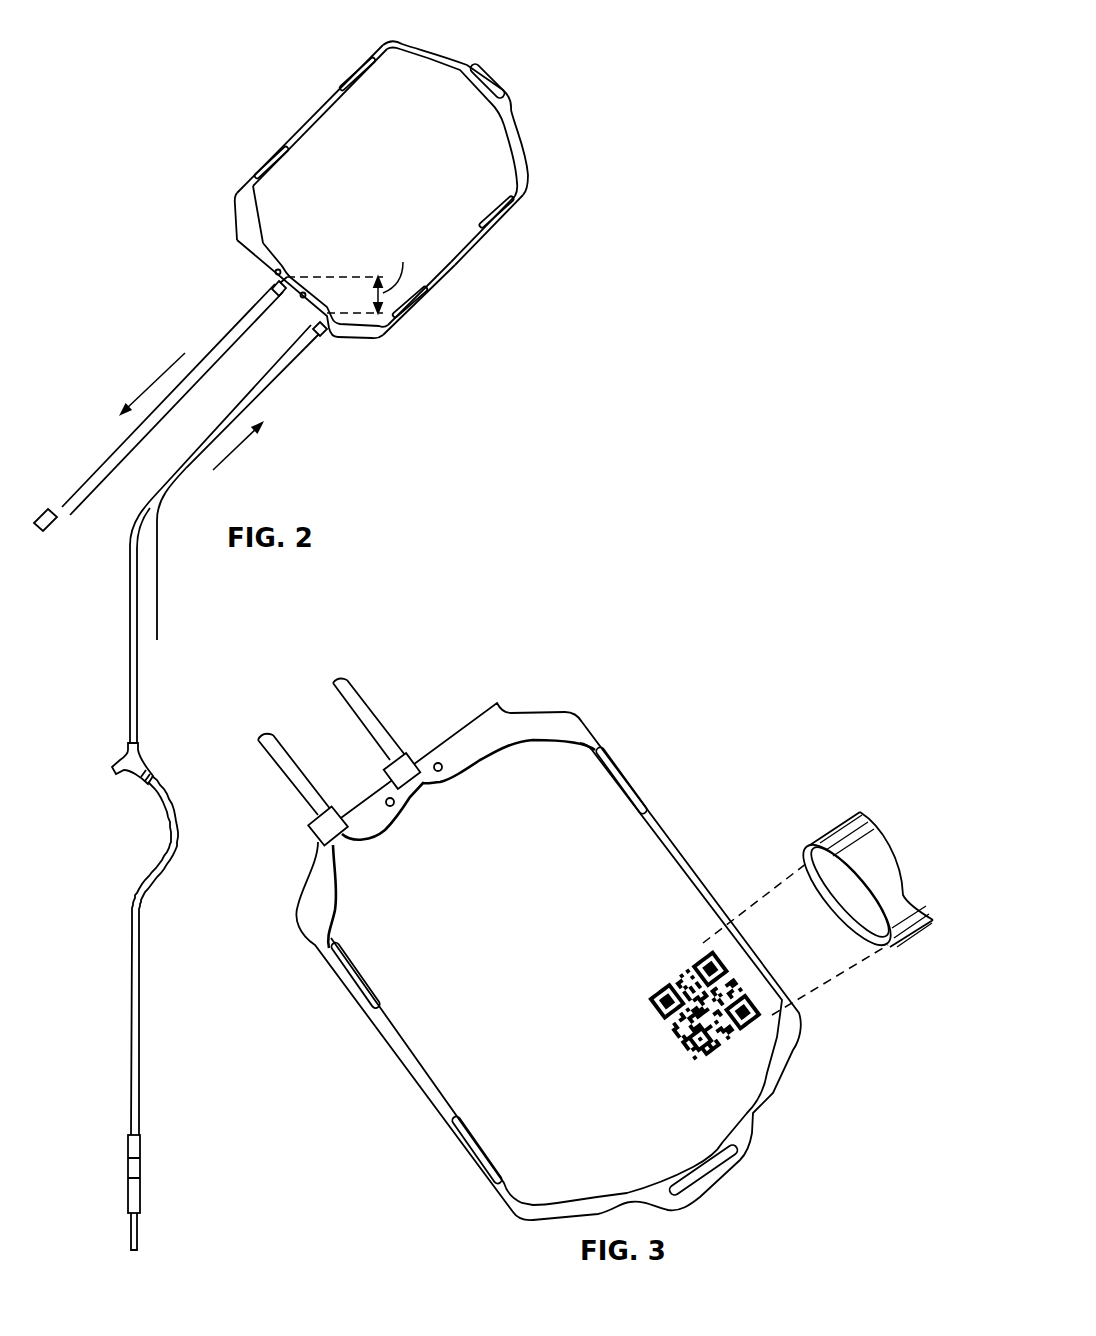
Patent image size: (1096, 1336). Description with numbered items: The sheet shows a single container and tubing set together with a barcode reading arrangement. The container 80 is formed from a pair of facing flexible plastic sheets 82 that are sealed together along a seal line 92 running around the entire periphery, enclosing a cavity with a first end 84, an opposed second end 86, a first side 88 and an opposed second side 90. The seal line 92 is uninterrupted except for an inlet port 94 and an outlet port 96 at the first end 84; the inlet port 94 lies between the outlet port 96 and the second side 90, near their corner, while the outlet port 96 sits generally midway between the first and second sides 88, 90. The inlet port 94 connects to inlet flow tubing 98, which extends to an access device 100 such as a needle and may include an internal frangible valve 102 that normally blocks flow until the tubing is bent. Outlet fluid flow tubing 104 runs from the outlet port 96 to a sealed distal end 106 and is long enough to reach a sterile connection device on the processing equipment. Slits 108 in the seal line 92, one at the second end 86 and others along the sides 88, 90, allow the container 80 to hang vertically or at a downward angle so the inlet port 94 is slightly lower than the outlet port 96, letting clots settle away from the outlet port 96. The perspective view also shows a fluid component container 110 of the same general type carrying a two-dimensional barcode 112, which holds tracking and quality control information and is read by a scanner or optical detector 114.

In FIG. 2, the container 80 is at (540, 152).
In FIG. 2, the flexible plastic films or sheets 82 is at (483, 170).
In FIG. 2, the first portion or end 84 is at (281, 247).
In FIG. 2, the second portion or end 86 is at (495, 108).
In FIG. 2, the first side or lateral portion 88 is at (332, 124).
In FIG. 2, the second side or lateral portion 90 is at (440, 253).
In FIG. 2, the seal line 92 is at (442, 273).
In FIG. 2, the inlet port 94 is at (337, 328).
In FIG. 2, the outlet port 96 is at (273, 275).
In FIG. 2, the inlet flow tubing 98 is at (138, 698).
In FIG. 2, the access device 100 is at (135, 1225).
In FIG. 2, the internal frangible valve 102 is at (135, 1150).
In FIG. 2, the outlet fluid flow tubing 104 is at (220, 340).
In FIG. 2, the sealed distal end 106 is at (50, 512).
In FIG. 2, the slits 108 is at (472, 62).
In FIG. 3, the fluid or fluid component container 110 is at (560, 807).
In FIG. 3, the two-dimensional barcode 112 is at (733, 1040).
In FIG. 3, the scanner or optical detector 114 is at (877, 867).